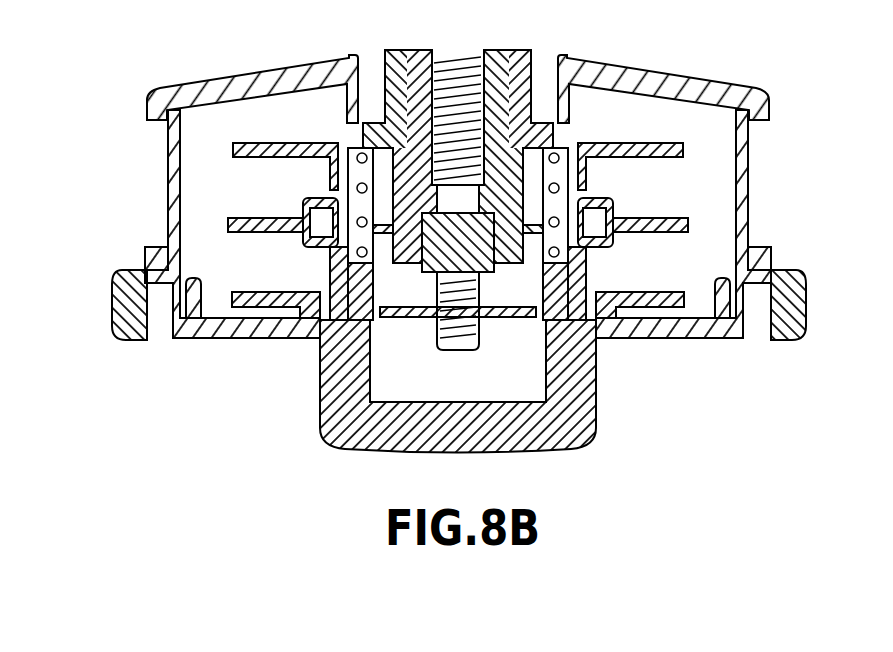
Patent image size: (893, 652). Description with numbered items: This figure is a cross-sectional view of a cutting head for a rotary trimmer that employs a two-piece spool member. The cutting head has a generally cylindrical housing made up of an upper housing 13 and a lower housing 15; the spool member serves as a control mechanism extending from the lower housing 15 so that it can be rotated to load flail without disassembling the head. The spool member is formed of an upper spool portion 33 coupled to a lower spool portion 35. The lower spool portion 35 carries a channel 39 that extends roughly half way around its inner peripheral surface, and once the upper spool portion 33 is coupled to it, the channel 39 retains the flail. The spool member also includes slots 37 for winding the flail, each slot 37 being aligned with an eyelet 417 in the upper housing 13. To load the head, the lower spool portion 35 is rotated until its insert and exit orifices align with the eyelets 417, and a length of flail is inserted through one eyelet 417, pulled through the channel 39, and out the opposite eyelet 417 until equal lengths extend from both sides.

The upper housing 13 is at (727, 80).
The lower housing 15 is at (713, 338).
The upper spool portion 33 is at (643, 142).
The lower spool portion 35 is at (596, 408).
The slot 37 is at (224, 183).
The channel 39 is at (335, 235).
The eyelet 417 is at (124, 168).